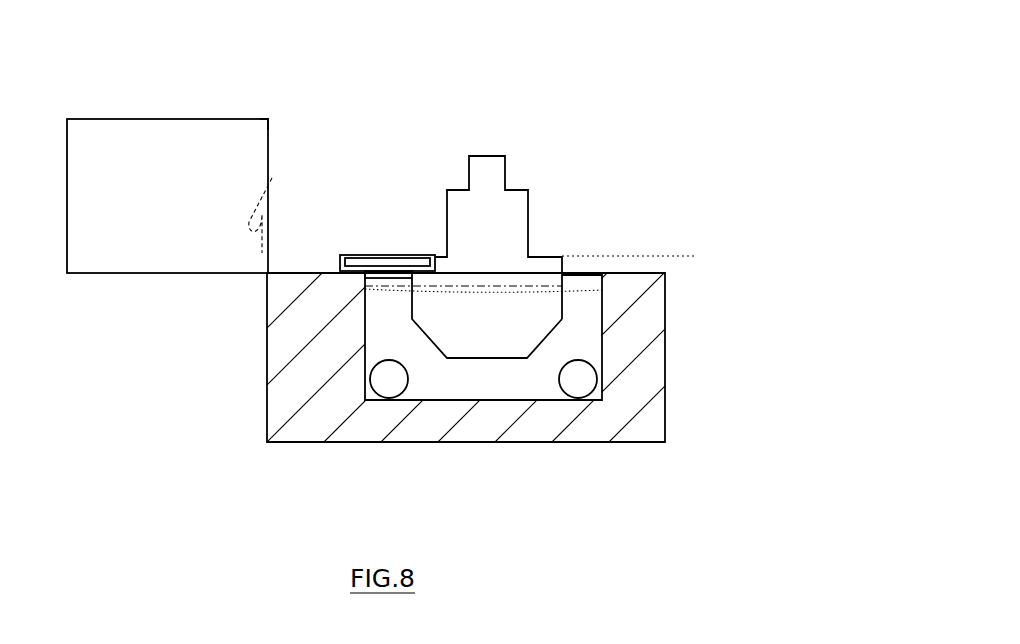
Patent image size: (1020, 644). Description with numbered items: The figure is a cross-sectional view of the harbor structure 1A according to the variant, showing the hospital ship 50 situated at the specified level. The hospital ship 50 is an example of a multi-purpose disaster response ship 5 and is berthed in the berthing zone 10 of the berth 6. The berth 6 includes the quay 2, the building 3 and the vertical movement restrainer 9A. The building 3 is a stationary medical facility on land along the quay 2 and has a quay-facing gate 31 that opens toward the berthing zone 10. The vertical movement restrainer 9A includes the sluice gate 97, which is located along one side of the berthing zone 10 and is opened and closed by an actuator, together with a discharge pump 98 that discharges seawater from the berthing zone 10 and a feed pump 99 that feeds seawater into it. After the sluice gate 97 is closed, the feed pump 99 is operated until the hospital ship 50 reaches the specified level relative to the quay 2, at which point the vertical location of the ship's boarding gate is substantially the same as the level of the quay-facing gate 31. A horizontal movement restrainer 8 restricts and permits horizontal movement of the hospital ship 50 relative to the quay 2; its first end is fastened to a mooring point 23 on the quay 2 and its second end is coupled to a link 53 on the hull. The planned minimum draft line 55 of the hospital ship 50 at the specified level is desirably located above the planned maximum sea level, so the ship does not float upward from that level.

The harbor structure 1A is at (605, 97).
The building 3 is at (147, 119).
The berth 6 is at (253, 100).
The quay-facing gate 31 is at (273, 177).
The quay 2 is at (307, 272).
The berthing zone 10 is at (607, 238).
The sluice gate 97 is at (580, 274).
The horizontal movement restrainer 8 is at (388, 255).
The mooring point 23 is at (343, 253).
The link 53 is at (433, 255).
The multi-purpose disaster response ship 5 is at (492, 207).
The hospital ship 50 is at (488, 155).
The planned minimum draft line 55 is at (537, 287).
The discharge pump 98 is at (388, 398).
The feed pump 99 is at (578, 398).
The vertical movement restrainer 9A is at (512, 447).